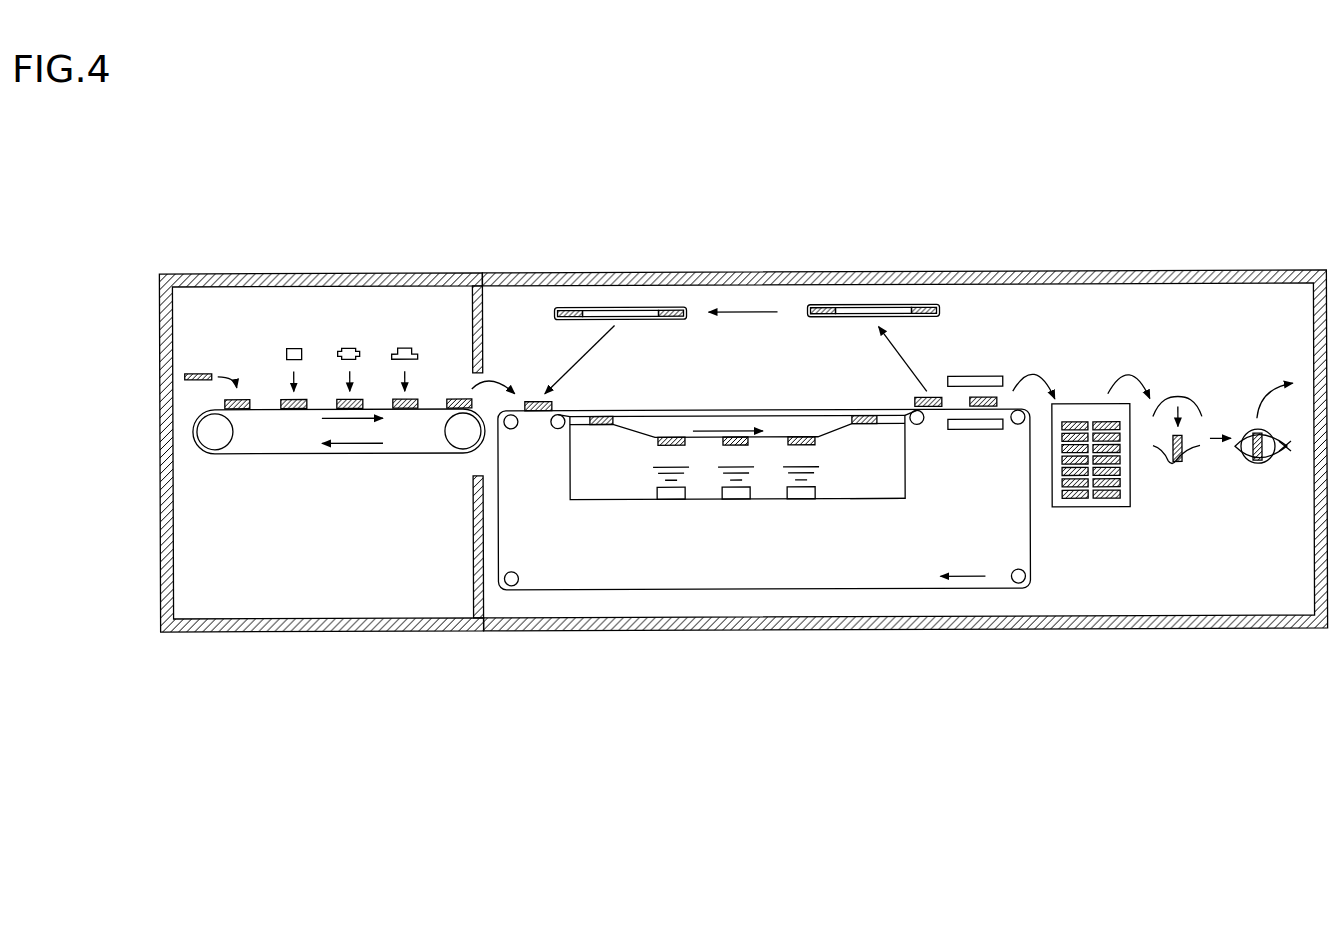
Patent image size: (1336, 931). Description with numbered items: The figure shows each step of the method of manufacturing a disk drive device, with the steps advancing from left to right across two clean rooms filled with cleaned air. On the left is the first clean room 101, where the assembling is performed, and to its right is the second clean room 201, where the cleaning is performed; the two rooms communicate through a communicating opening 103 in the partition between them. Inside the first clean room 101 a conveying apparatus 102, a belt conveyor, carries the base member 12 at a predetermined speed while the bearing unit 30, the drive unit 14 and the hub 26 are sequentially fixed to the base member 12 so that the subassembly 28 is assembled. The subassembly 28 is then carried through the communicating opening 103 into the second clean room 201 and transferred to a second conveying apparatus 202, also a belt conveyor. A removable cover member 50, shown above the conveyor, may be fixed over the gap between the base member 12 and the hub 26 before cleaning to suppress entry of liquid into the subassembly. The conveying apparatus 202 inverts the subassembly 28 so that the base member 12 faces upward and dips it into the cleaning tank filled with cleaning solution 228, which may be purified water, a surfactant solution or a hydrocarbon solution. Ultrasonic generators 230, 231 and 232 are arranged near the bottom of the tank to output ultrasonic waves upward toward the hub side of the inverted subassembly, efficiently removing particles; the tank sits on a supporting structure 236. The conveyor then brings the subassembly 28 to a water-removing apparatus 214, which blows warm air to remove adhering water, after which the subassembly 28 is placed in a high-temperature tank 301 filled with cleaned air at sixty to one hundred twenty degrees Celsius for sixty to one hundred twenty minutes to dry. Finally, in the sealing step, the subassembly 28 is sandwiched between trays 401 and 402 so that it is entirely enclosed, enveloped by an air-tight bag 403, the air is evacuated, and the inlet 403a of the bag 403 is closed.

The first clean room 101 is at (252, 298).
The second clean room 201 is at (513, 307).
The communicating opening 103 is at (475, 462).
The conveying apparatus 102 is at (233, 452).
The base member 12 is at (198, 370).
The bearing unit 30 is at (294, 345).
The drive unit 14 is at (350, 345).
The hub 26 is at (405, 345).
The subassembly 28 is at (456, 396).
The removable cover member 50 is at (566, 307).
The conveying apparatus 202 is at (558, 590).
The water-removing apparatus 214 is at (990, 376).
The cleaning solution 228 is at (615, 485).
The ultrasonic generator 230 is at (671, 492).
The ultrasonic generator 231 is at (736, 492).
The ultrasonic generator 232 is at (801, 492).
The platform 236 is at (867, 500).
The high-temperature tank 301 is at (1090, 508).
The tray 402 is at (1184, 396).
The tray 401 is at (1166, 470).
The bag 403 is at (1236, 455).
The inlet 403a is at (1282, 462).